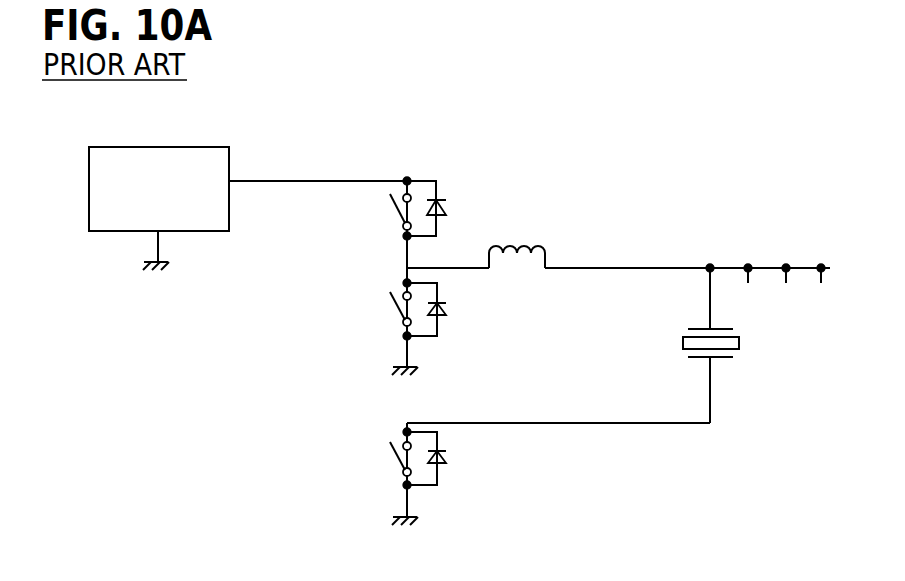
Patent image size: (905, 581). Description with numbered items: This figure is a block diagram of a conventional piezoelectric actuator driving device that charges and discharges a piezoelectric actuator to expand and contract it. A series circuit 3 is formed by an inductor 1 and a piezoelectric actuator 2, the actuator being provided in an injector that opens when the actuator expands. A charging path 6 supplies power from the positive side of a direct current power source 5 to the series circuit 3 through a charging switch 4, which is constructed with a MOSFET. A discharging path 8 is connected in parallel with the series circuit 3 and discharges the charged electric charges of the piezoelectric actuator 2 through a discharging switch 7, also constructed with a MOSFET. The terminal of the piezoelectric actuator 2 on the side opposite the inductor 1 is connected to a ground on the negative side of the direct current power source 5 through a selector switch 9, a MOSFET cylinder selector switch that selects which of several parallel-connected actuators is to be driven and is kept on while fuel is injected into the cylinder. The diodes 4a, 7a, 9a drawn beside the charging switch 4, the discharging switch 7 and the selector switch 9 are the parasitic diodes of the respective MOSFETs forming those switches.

The inductor 1 is at (520, 245).
The piezoelectric actuator 2 is at (742, 341).
The series circuit 3 is at (687, 231).
The charging switch 4 is at (396, 213).
The diode 4a is at (449, 207).
The direct current power source 5 is at (182, 147).
The charging path 6 is at (426, 174).
The discharging switch 7 is at (396, 311).
The diode 7a is at (459, 350).
The discharging path 8 is at (436, 337).
The selector switch 9 is at (396, 463).
The diode 9a is at (450, 458).